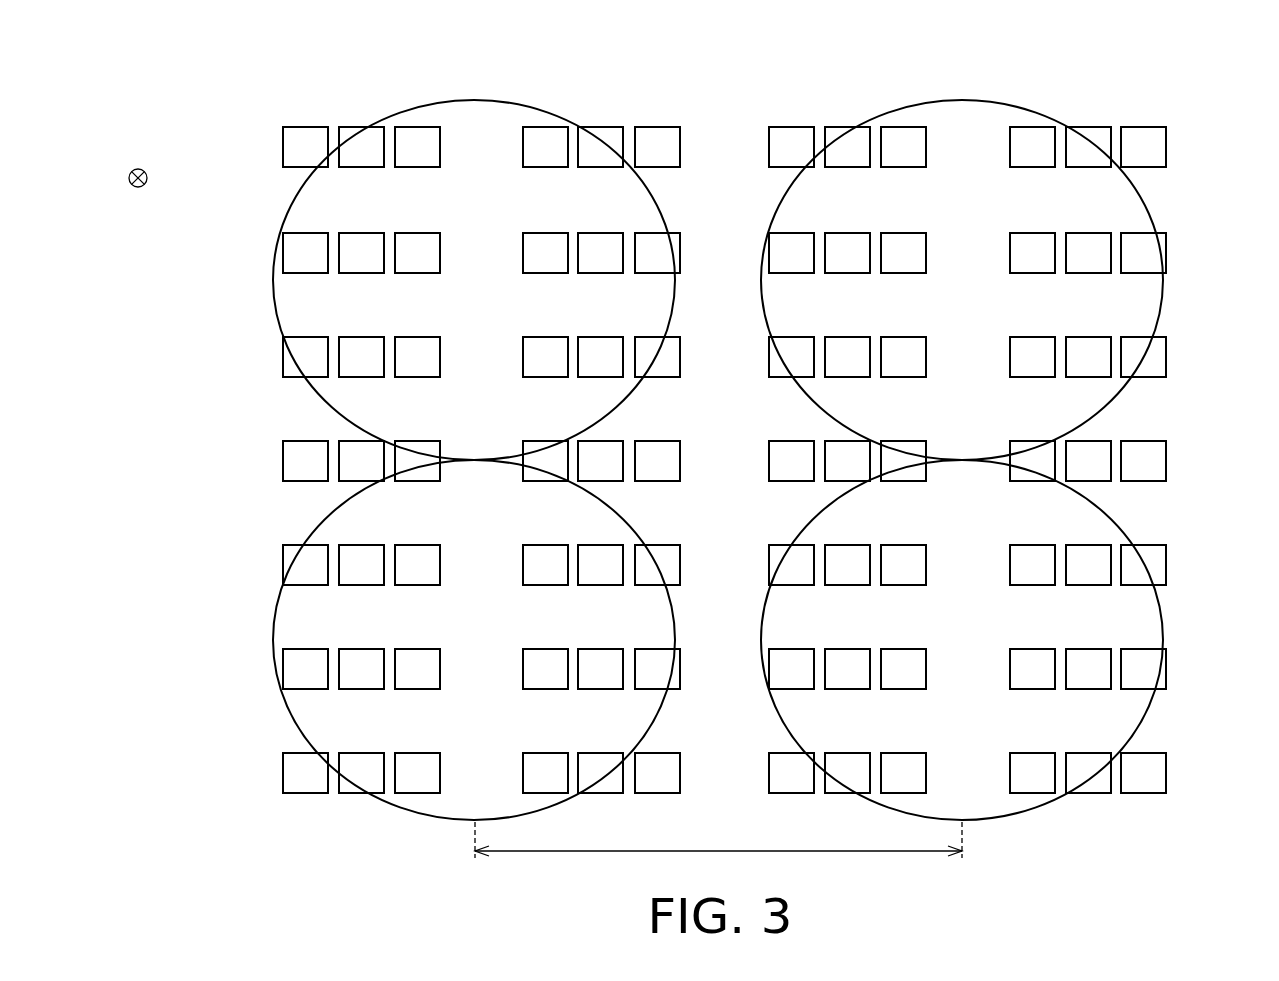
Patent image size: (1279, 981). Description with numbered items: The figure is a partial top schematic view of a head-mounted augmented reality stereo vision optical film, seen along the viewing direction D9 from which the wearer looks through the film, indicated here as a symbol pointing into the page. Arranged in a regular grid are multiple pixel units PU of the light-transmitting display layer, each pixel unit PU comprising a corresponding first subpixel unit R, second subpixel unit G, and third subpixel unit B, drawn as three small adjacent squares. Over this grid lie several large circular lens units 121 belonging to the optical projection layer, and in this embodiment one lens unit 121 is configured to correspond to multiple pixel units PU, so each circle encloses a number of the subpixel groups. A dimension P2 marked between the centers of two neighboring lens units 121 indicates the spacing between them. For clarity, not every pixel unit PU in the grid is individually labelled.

The lens unit 121 is at (489, 99).
The pixel unit PU is at (476, 90).
The first subpixel unit R is at (307, 143).
The second subpixel unit G is at (358, 148).
The third subpixel unit B is at (417, 115).
The viewing direction D9 is at (116, 178).
The pitch P2 is at (718, 836).